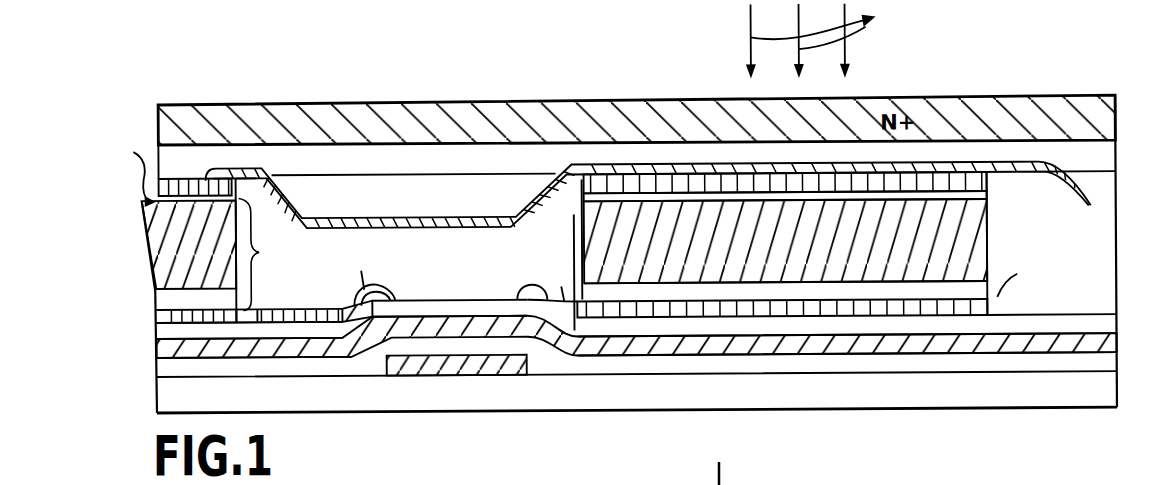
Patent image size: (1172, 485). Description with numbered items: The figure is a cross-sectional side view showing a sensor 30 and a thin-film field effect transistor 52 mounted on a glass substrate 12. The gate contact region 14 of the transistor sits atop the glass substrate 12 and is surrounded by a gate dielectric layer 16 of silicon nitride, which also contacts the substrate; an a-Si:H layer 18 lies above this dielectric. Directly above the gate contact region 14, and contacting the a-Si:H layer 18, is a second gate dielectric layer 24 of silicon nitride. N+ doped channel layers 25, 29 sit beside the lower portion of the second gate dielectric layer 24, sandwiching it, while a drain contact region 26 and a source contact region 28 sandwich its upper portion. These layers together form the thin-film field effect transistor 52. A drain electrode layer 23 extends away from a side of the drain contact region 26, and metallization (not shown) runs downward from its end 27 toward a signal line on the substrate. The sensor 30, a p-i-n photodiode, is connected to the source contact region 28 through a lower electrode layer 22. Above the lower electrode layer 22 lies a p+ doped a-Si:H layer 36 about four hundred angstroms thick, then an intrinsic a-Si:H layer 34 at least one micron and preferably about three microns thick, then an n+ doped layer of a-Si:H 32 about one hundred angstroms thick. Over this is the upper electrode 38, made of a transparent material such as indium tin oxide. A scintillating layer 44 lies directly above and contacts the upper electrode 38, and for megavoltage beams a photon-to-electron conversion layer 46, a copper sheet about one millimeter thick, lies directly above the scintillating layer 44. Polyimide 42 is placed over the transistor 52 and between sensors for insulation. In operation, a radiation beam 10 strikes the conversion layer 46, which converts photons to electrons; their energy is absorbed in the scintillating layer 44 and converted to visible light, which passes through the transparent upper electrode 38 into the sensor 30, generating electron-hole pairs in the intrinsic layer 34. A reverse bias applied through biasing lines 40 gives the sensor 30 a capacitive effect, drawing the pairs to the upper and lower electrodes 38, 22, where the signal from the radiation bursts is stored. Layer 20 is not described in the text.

The radiation beam 10 is at (827, 40).
The glass substrate 12 is at (1009, 398).
The gate contact region 14 is at (497, 370).
The gate dielectric layer 16 is at (325, 368).
The a-Si:H layer 18 is at (370, 345).
The insulating layer 20 is at (218, 333).
The lower electrode layer 22 is at (992, 315).
The drain electrode layer 23 is at (290, 320).
The second gate dielectric layer 24 is at (474, 323).
The n+ doped channel layer 25 is at (350, 308).
The drain contact region 26 is at (388, 294).
The end of the drain electrode layer 27 is at (283, 284).
The source contact region 28 is at (532, 291).
The n+ doped channel layer 29 is at (576, 353).
The sensor 30 is at (260, 253).
The n+ doped layer of a-Si:H 32 is at (992, 200).
The intrinsic a-Si:H layer 34 is at (985, 229).
The p+ doped a-Si:H layer 36 is at (1005, 273).
The upper electrode 38 is at (992, 184).
The biasing lines 40 is at (447, 218).
The polyimide 42 is at (352, 249).
The scintillating layer 44 is at (370, 159).
The photon-to-electron conversion layer 46 is at (442, 122).
The thin-film field effect transistor 52 is at (438, 289).